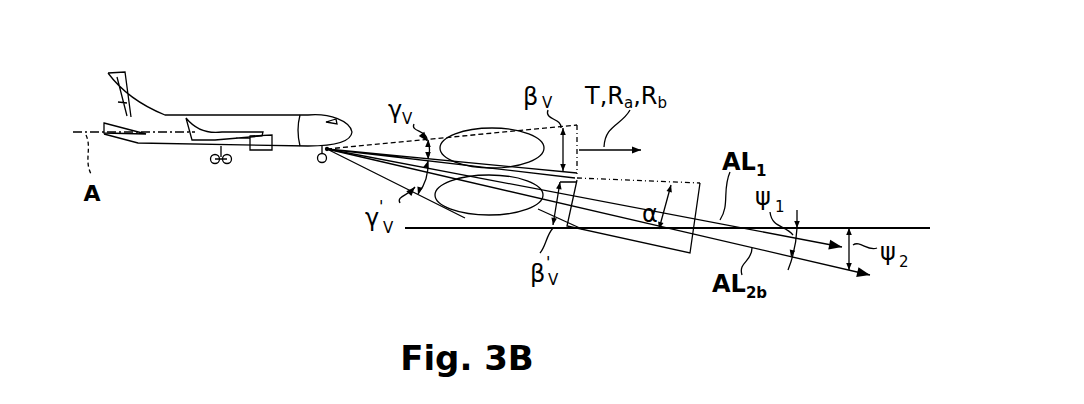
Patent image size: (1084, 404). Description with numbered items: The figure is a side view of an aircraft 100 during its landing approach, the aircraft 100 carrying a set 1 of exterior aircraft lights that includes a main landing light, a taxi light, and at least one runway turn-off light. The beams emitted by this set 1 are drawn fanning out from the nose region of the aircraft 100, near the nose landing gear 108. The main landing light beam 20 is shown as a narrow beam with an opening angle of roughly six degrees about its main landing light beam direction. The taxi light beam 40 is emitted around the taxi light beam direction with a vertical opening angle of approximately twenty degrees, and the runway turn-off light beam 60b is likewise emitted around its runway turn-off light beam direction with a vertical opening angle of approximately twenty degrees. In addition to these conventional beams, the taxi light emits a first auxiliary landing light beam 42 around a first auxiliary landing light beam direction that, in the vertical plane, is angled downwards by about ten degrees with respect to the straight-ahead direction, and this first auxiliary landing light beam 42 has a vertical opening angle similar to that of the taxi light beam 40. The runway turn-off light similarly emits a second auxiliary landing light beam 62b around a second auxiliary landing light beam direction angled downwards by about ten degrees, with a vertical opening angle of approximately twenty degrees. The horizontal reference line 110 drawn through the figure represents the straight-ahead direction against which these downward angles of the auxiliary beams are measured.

The aircraft 100 is at (163, 77).
The nose landing gear 108 is at (313, 164).
The set of exterior aircraft lights 1 is at (327, 168).
The runway turn-off light beam 60b is at (502, 115).
The taxi light beam 40 is at (567, 102).
The main landing light beam 20 is at (692, 165).
The horizontal reference line 110 is at (870, 227).
The second auxiliary landing light beam 62b is at (462, 220).
The first auxiliary landing light beam 42 is at (527, 222).